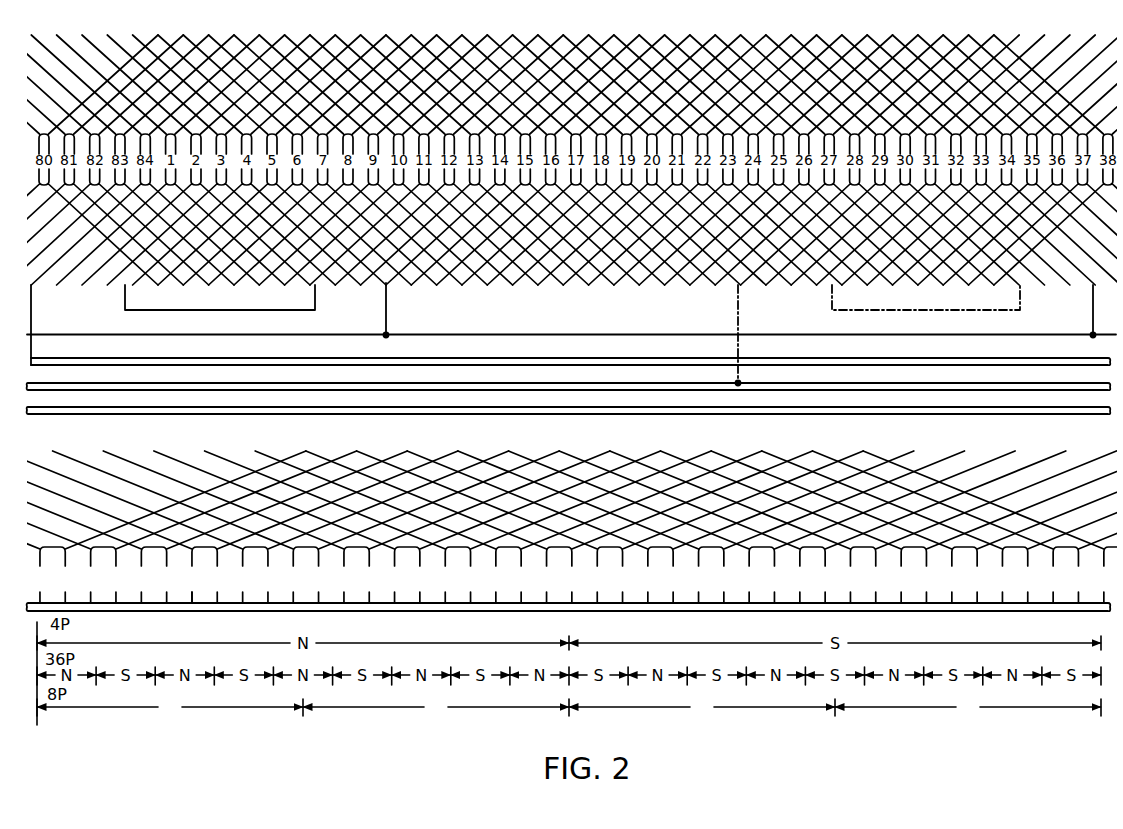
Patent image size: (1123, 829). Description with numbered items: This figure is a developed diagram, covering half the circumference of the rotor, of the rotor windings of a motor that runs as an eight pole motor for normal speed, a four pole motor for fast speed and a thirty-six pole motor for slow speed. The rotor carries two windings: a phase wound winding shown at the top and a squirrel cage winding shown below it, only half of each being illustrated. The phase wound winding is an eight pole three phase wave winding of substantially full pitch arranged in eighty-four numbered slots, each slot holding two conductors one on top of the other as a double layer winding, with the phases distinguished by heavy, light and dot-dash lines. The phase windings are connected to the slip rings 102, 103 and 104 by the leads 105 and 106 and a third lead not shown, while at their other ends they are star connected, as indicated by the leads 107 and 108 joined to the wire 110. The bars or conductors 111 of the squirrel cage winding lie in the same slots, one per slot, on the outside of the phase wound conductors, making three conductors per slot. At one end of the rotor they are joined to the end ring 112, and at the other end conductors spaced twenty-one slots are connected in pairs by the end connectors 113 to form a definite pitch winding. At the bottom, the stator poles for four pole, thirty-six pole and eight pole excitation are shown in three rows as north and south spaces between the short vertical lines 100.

The short vertical lines 100 is at (98, 673).
The slip ring 102 is at (57, 362).
The slip ring 103 is at (57, 387).
The slip ring 104 is at (57, 410).
The lead 105 is at (33, 312).
The lead 106 is at (741, 316).
The lead 107 is at (388, 313).
The lead 108 is at (1091, 300).
The wire 110 is at (532, 333).
The bars or conductors of the squirrel cage winding 111 is at (197, 602).
The end ring 112 is at (260, 611).
The end connectors 113 is at (60, 458).